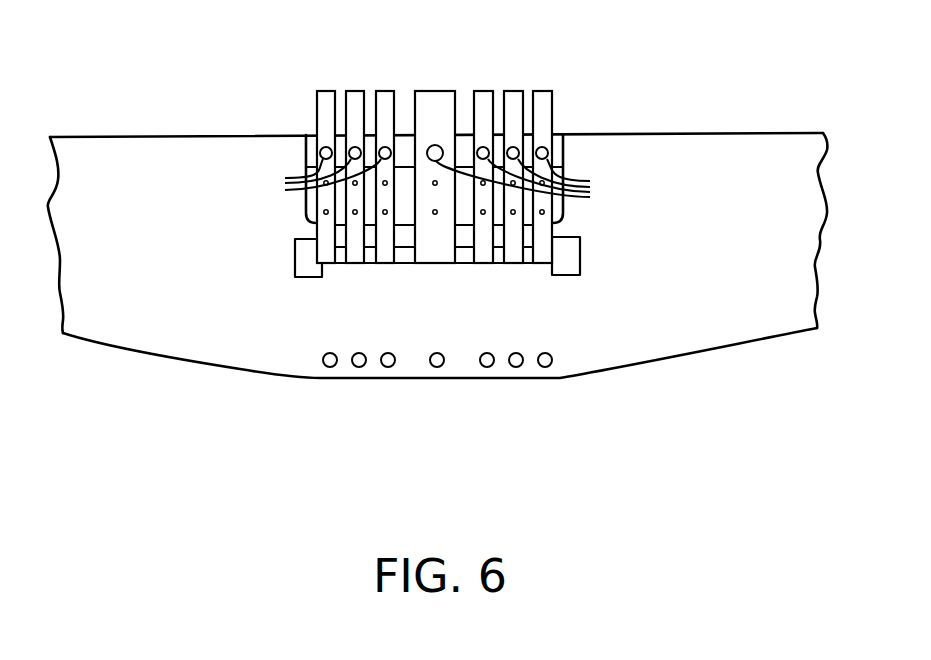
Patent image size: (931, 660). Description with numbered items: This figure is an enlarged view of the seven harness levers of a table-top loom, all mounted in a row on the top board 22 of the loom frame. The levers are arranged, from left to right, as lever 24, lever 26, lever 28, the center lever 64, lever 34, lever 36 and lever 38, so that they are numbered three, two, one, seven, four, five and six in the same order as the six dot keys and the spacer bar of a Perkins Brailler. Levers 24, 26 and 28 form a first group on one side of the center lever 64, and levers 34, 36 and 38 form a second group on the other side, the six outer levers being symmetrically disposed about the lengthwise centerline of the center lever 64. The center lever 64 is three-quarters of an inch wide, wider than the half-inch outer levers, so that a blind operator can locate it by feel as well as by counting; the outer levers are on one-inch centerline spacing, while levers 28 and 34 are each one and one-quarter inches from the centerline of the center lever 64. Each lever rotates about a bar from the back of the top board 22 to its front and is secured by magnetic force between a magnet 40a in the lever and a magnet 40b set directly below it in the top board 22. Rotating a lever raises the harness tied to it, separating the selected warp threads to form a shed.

The top board 22 is at (700, 133).
The lever 24 is at (326, 90).
The lever 26 is at (354, 90).
The lever 28 is at (387, 90).
The center lever 64 is at (435, 90).
The lever 34 is at (482, 90).
The lever 36 is at (515, 90).
The lever 38 is at (545, 90).
The magnet 40a is at (436, 179).
The magnet 40b is at (333, 367).